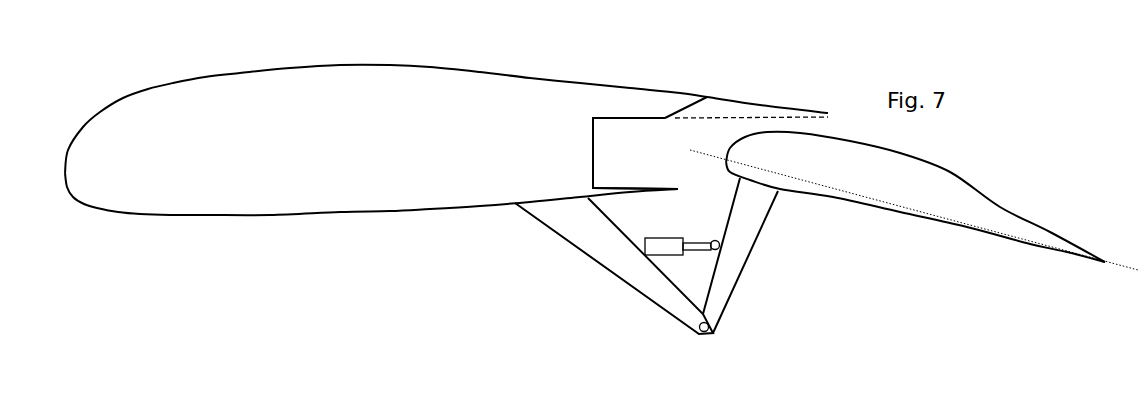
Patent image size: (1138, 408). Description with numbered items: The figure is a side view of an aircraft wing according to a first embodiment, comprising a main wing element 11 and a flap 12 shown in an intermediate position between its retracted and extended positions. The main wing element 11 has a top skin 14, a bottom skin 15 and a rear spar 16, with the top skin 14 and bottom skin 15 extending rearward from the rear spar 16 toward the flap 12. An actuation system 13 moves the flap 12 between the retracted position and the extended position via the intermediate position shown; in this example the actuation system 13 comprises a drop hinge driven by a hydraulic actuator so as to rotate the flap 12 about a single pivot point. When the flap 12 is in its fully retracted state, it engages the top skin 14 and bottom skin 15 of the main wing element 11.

The main wing element 11 is at (320, 92).
The flap 12 is at (953, 200).
The actuation system 13 is at (612, 295).
The top skin 14 is at (588, 82).
The bottom skin 15 is at (628, 188).
The rear spar 16 is at (593, 150).